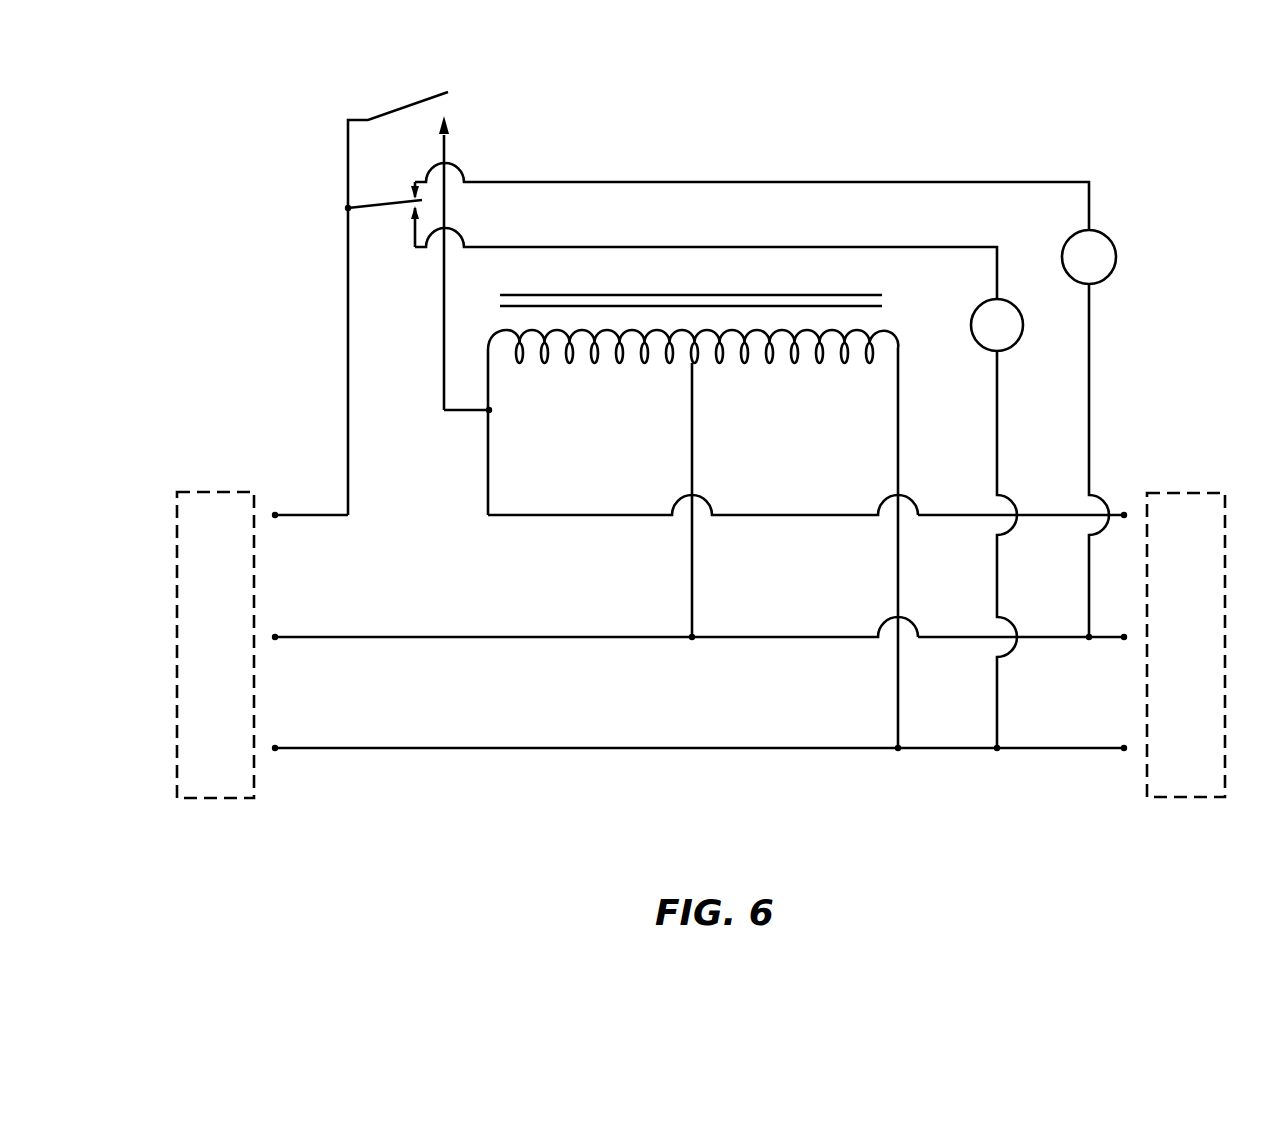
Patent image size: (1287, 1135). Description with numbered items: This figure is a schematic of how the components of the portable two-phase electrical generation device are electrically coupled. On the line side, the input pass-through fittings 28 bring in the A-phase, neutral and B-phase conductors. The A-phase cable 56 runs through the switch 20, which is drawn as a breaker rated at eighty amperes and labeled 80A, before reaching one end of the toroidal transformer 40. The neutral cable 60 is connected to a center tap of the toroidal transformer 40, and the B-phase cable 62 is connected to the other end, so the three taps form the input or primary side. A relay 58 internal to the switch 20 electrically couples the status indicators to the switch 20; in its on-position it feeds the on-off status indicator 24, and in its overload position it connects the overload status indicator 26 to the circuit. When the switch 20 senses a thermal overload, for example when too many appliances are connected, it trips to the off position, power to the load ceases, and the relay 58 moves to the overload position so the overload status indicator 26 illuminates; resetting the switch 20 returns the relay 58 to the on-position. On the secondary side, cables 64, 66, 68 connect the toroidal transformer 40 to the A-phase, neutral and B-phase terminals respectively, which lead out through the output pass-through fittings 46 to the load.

The switch 20 is at (348, 162).
The relay 58 is at (372, 211).
The 80A breaker 80A is at (470, 112).
The toroidal transformer 40 is at (732, 287).
The on-off status indicator 24 is at (977, 302).
The overload status indicator 26 is at (1116, 260).
The A-phase cable 56 is at (304, 515).
The neutral cable 60 is at (388, 637).
The B-phase cable 62 is at (406, 750).
The cable 64 is at (956, 515).
The cable 66 is at (957, 637).
The cable 68 is at (950, 748).
The input pass-through fittings 28 is at (200, 800).
The output pass-through fittings 46 is at (1203, 798).